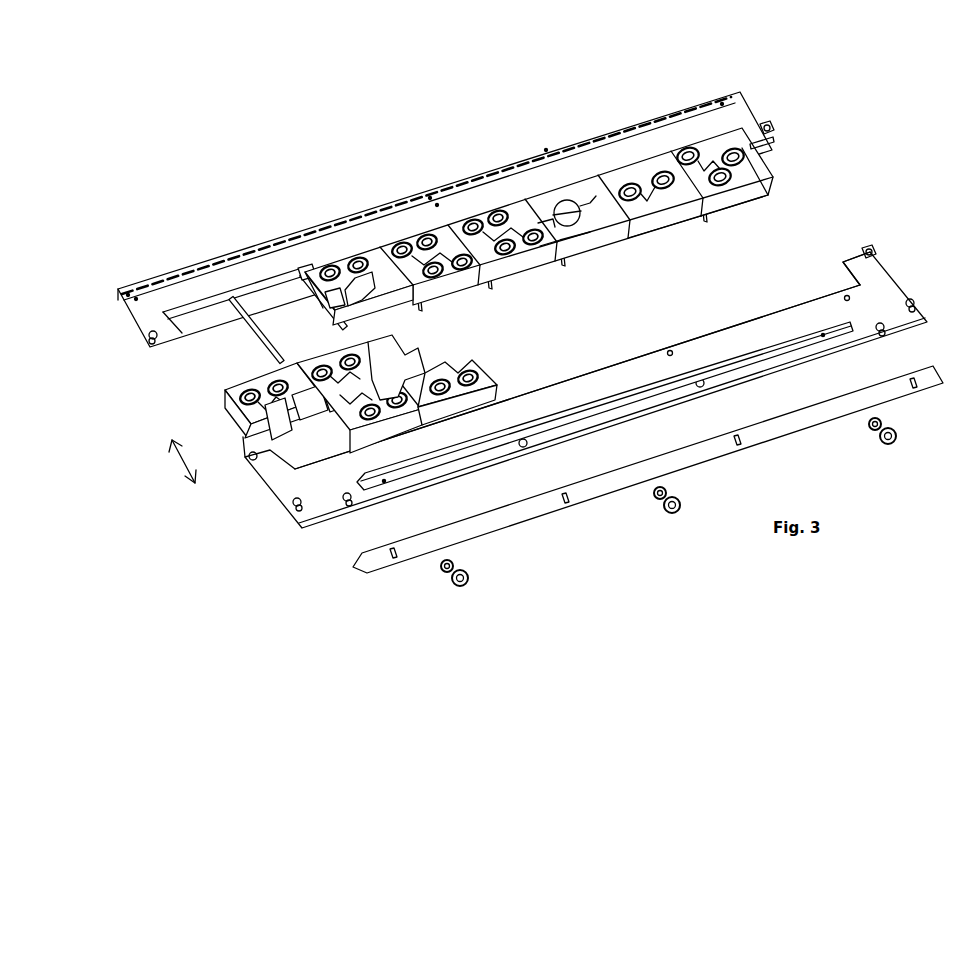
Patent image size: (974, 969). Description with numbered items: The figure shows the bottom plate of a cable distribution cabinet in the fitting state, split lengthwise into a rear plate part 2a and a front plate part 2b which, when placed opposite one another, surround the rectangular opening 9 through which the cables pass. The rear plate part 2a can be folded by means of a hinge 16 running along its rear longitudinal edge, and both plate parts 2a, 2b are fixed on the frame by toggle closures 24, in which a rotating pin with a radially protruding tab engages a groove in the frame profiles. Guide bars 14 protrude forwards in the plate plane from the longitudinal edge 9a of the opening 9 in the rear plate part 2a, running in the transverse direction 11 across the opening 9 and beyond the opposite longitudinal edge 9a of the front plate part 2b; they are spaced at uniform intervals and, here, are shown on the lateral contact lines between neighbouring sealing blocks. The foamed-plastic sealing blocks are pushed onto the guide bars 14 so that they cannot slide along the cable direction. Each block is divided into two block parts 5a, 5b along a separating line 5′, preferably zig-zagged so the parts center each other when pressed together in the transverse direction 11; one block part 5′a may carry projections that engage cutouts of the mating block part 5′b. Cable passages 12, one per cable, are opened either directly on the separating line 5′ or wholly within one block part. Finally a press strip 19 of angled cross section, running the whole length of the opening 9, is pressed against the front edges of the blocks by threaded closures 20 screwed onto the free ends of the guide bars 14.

The rear plate part 2a is at (140, 307).
The front plate part 2b is at (286, 481).
The separating line 5′ is at (589, 177).
The block part 5′a is at (567, 207).
The block part 5′b is at (580, 227).
The block part 5a is at (380, 262).
The block part 5b is at (482, 368).
The rectangular opening 9 is at (848, 271).
The longitudinal edge 9a is at (215, 303).
The transverse direction 11 is at (181, 462).
The cable passages 12 is at (408, 366).
The guide bars 14 is at (256, 334).
The hinge 16 is at (250, 248).
The press strip 19 is at (533, 508).
The threaded closures 20 is at (662, 514).
The toggle closures 24 is at (777, 131).